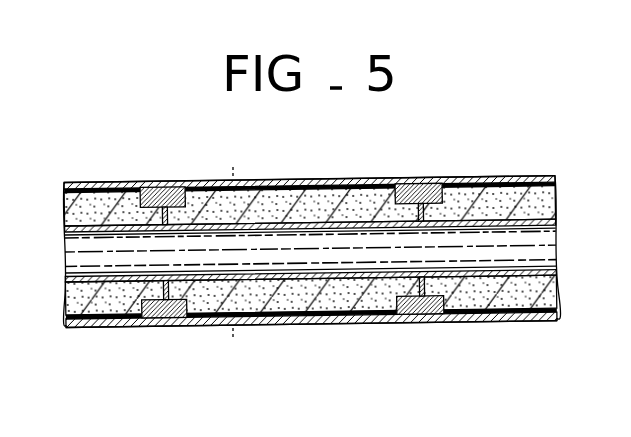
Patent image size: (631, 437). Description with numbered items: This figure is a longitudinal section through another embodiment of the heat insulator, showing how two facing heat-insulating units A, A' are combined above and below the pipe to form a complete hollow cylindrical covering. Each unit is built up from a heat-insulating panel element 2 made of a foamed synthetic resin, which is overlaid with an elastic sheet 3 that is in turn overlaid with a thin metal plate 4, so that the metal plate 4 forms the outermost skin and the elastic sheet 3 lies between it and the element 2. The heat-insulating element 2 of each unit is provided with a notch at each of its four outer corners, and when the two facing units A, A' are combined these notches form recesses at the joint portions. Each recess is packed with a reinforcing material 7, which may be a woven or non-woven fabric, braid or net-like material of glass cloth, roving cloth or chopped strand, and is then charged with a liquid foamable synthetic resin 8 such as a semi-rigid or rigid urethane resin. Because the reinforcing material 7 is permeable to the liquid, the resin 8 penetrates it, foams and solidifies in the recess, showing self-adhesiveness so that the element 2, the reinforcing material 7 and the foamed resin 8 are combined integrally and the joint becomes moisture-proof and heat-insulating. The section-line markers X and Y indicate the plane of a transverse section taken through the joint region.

The heat-insulating panel element 2 is at (83, 198).
The elastic sheet 3 is at (270, 313).
The thin metal plate 4 is at (107, 325).
The reinforcing material 7 is at (173, 197).
The foamed synthetic resin 8 is at (152, 197).
The heat-insulating unit A is at (309, 144).
The heat-insulating unit A' is at (311, 370).
The section line X is at (222, 150).
The section line Y is at (222, 356).